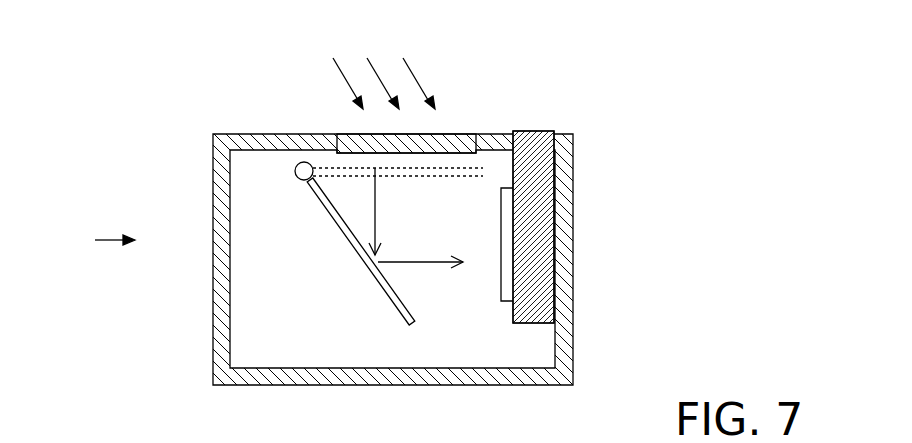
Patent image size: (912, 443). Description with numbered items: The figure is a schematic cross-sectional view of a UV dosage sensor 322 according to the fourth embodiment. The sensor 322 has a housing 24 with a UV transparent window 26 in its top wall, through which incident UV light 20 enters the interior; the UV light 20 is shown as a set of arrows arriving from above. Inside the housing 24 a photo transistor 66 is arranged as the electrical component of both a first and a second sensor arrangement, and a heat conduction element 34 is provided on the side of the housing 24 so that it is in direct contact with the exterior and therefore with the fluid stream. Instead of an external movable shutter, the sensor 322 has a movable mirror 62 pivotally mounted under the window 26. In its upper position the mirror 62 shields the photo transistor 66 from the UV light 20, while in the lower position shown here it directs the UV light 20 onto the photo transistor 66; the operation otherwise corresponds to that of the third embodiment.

The UV light 20 is at (366, 51).
The housing 24 is at (222, 300).
The UV transparent window 26 is at (463, 134).
The heat conduction element 34 is at (545, 245).
The movable mirror 62 is at (347, 237).
The photo transistor 66 is at (503, 293).
The sensor 322 is at (91, 241).